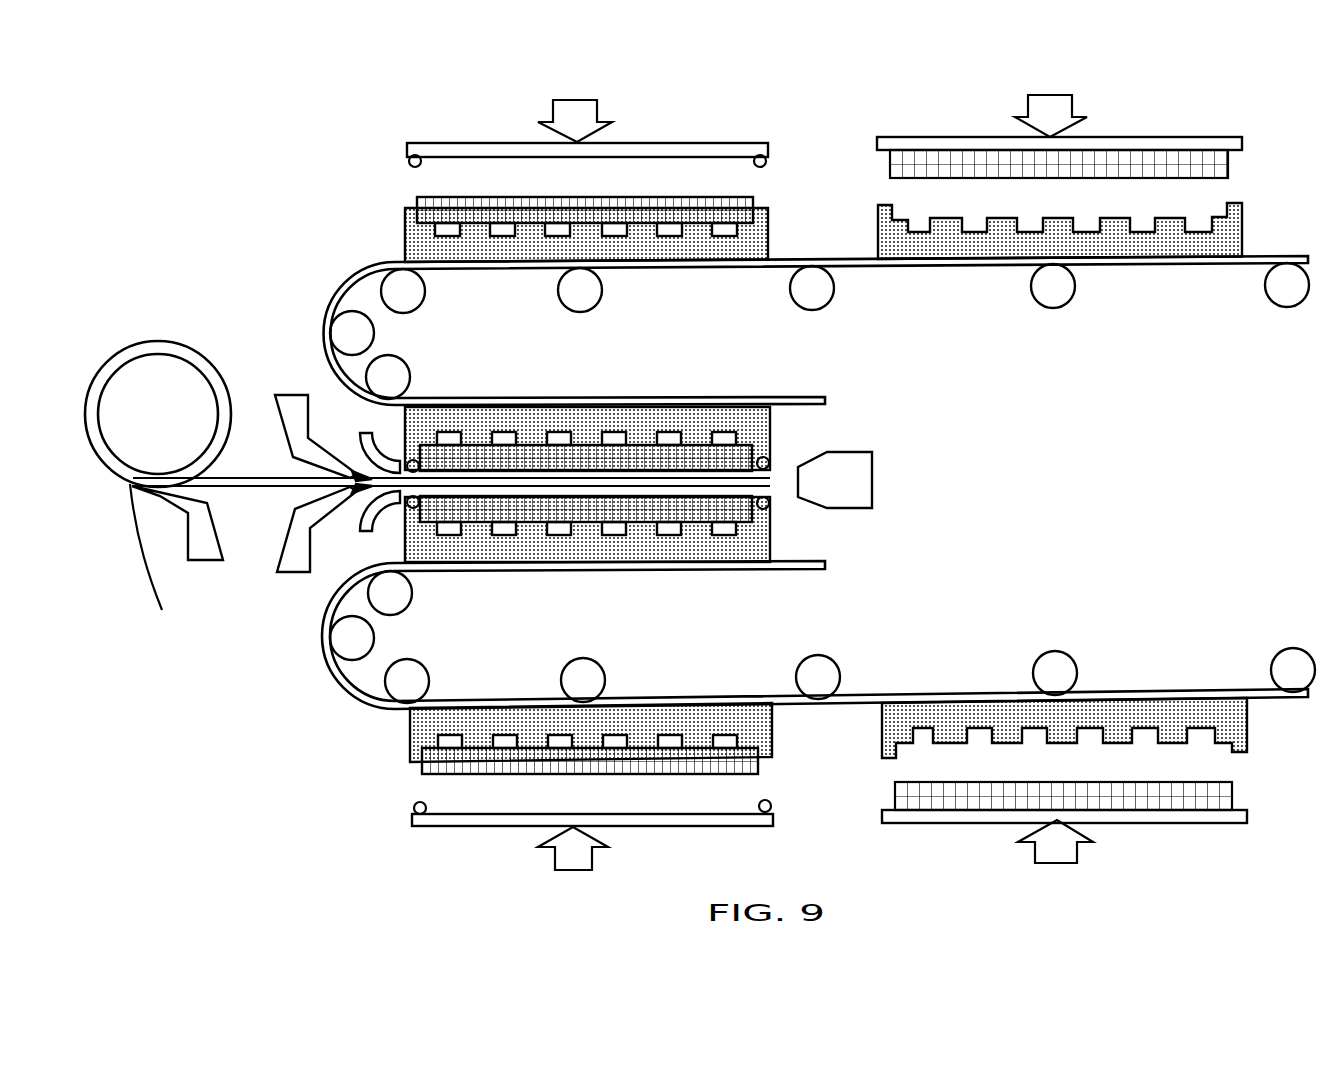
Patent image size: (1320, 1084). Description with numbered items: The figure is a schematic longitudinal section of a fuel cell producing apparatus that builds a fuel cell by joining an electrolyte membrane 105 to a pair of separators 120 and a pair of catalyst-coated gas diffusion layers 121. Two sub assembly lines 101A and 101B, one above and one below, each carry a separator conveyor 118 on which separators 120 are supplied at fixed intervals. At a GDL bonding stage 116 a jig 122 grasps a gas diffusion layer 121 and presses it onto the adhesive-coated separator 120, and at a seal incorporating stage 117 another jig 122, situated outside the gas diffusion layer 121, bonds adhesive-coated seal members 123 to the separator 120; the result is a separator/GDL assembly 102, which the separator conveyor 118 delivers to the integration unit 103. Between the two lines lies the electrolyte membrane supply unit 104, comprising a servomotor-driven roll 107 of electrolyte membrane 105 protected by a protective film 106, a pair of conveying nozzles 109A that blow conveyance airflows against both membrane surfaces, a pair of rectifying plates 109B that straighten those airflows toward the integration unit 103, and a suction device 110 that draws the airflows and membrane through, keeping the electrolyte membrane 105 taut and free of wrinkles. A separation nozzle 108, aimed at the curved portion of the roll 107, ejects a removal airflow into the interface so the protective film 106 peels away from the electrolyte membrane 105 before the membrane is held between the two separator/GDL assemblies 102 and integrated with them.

The sub assembly line 101A is at (758, 287).
The sub assembly line 101B is at (368, 747).
The separator/GDL assembly 102 is at (391, 201).
The integration unit 103 is at (631, 386).
The electrolyte membrane supply unit 104 is at (280, 292).
The electrolyte membrane 105 is at (248, 477).
The protective film 106 is at (150, 547).
The roll 107 is at (172, 340).
The separation nozzle 108 is at (200, 567).
The conveying nozzle 109A is at (290, 392).
The rectifying plate 109B is at (362, 435).
The suction device 110 is at (878, 477).
The GDL bonding stage 116 is at (1089, 123).
The seal incorporating stage 117 is at (634, 116).
The separator conveyor 118 is at (877, 271).
The separator 120 is at (1235, 232).
The gas diffusion layer 121 is at (1230, 165).
The jig 122 is at (728, 146).
The seal member 123 is at (768, 161).